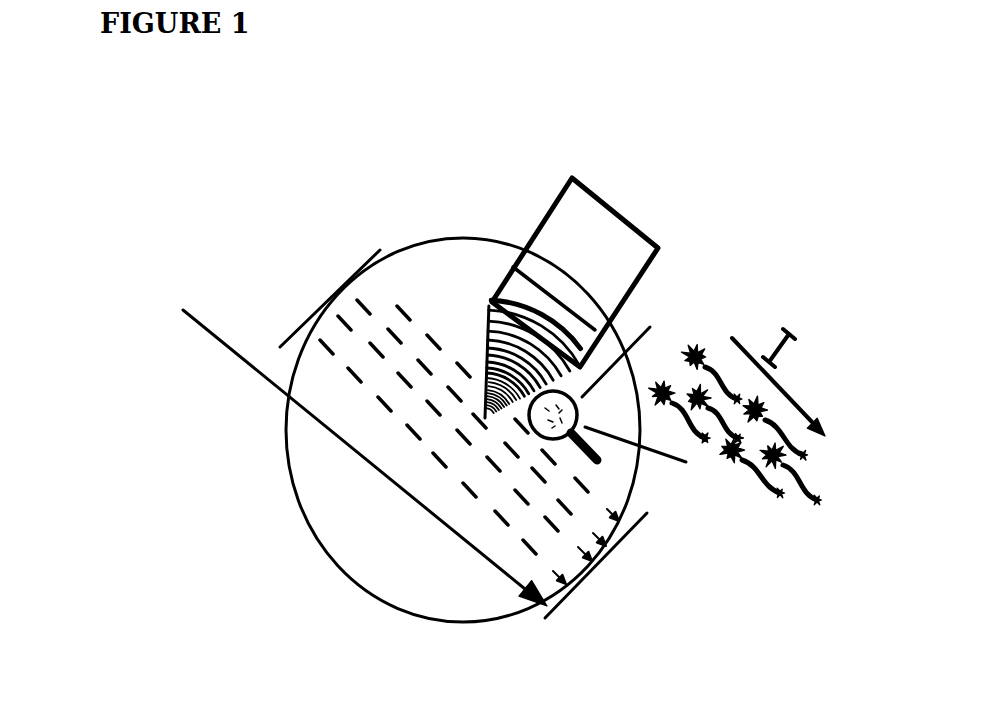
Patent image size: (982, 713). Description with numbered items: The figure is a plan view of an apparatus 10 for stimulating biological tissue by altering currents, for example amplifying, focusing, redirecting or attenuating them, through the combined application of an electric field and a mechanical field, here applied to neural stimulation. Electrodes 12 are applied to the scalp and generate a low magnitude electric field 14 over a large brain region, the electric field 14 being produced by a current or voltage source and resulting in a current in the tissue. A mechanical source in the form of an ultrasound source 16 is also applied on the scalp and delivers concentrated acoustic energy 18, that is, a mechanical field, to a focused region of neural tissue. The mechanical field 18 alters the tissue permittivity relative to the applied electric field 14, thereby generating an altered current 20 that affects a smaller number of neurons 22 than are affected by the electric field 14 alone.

The apparatus 10 is at (90, 289).
The electrodes 12 is at (312, 295).
The electric field 14 is at (388, 288).
The ultrasound source 16 is at (590, 188).
The acoustic energy 18 is at (490, 330).
The altered current 20 is at (770, 338).
The neurons 22 is at (678, 477).